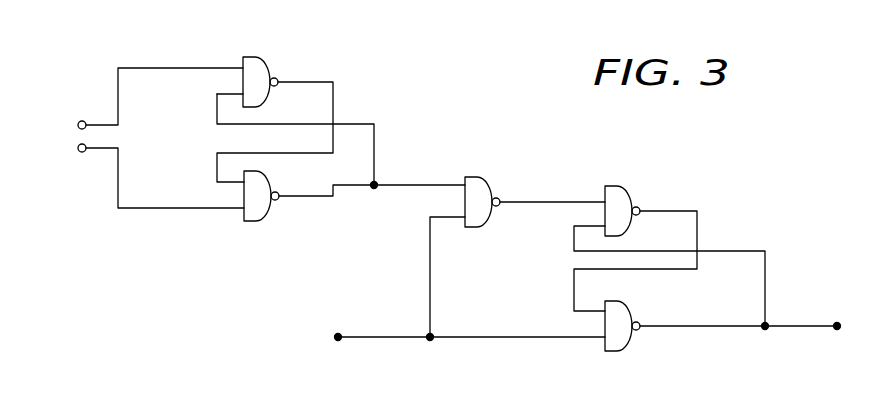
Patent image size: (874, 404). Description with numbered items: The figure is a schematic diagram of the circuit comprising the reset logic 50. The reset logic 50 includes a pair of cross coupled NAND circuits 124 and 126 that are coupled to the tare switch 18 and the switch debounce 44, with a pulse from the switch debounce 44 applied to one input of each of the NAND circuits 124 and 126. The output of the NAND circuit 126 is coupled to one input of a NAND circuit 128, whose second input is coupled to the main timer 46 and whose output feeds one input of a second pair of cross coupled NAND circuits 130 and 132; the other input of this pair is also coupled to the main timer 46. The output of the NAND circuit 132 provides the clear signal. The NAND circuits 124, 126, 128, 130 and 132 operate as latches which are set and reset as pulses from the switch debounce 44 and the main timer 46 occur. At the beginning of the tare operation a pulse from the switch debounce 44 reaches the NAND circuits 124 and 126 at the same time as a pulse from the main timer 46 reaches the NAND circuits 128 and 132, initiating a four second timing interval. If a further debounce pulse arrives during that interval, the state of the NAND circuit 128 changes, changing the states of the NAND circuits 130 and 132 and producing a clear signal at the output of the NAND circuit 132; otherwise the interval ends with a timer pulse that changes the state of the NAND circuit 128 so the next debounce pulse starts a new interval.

The tare switch 18 is at (170, 35).
The switch debounce 44 is at (72, 134).
The main timer 46 is at (408, 327).
The reset logic 50 is at (613, 268).
The NAND circuit 124 is at (261, 62).
The NAND circuit 126 is at (256, 208).
The NAND circuit 128 is at (478, 188).
The NAND circuit 130 is at (611, 197).
The NAND circuit 132 is at (617, 337).